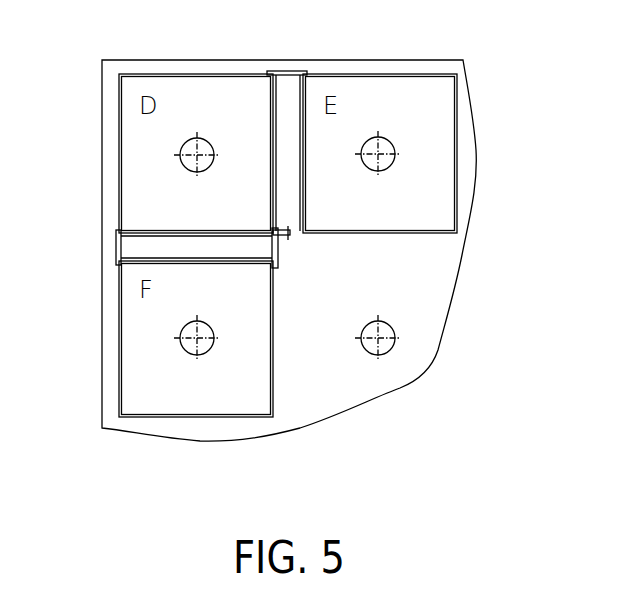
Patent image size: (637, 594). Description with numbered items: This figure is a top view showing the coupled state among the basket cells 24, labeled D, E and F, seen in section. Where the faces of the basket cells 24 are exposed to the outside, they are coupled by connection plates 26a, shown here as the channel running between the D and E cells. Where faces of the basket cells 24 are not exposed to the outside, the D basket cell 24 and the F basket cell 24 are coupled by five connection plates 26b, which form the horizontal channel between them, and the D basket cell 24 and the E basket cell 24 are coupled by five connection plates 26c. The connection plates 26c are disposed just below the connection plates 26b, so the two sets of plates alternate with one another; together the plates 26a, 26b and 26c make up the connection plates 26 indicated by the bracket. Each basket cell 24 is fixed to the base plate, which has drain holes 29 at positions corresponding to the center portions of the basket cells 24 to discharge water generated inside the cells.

The basket cell 24 is at (118, 153).
The connection plates 26 is at (555, 150).
The connection plate 26a is at (288, 72).
The connection plate 26b is at (280, 250).
The connection plate 26c is at (288, 232).
The drain hole 29 is at (370, 349).